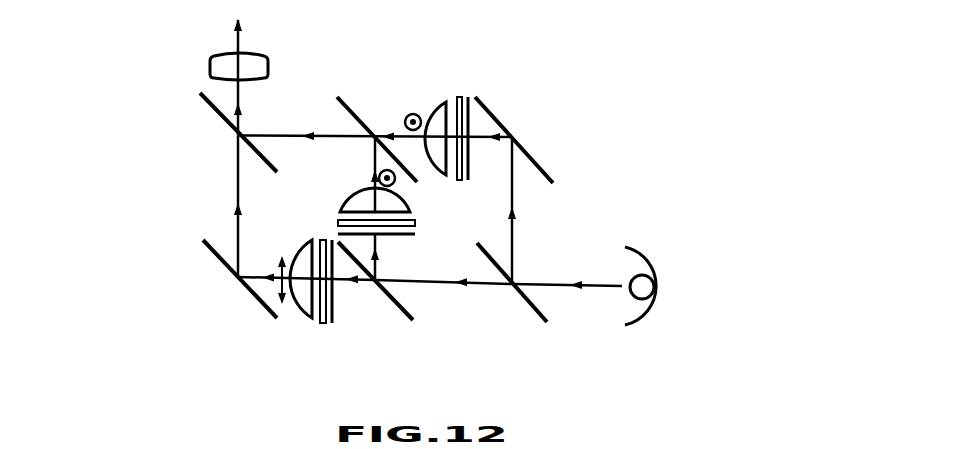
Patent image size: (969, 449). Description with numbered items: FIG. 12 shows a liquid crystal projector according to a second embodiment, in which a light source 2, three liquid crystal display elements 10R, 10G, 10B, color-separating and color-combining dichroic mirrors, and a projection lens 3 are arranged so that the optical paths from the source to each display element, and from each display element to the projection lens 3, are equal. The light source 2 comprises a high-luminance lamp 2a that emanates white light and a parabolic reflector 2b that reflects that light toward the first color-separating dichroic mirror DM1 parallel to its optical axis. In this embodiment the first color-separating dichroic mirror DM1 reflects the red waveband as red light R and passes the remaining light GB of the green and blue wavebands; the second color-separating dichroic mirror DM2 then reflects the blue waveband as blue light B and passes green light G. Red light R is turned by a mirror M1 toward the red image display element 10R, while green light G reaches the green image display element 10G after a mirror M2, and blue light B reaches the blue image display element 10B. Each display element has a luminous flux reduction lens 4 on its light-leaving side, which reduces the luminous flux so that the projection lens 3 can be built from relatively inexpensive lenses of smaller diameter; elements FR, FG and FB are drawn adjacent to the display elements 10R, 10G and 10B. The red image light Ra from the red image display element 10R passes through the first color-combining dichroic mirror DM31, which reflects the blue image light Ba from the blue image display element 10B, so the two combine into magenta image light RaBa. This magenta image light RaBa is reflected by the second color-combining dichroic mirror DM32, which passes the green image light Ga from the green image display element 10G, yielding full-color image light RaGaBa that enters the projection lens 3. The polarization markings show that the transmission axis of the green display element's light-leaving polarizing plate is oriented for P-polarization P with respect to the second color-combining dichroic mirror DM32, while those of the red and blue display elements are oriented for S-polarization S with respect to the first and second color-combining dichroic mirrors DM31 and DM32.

The light source 2 is at (598, 264).
The high-luminance lamp 2a is at (629, 280).
The reflector 2b is at (651, 320).
The projection lens 3 is at (225, 62).
The luminous flux reduction lens 4 is at (440, 100).
The red image display element 10R is at (461, 97).
The green image display element 10G is at (323, 323).
The blue image display element 10B is at (340, 222).
The red filter FR is at (478, 128).
The green filter FG is at (333, 312).
The blue filter FB is at (414, 236).
The first color-separating dichroic mirror DM1 is at (548, 324).
The second color-separating dichroic mirror DM2 is at (413, 322).
The first color-combining dichroic mirror DM31 is at (349, 106).
The second color-combining dichroic mirror DM32 is at (215, 108).
The mirror M1 is at (545, 170).
The mirror M2 is at (215, 258).
The P-polarization P is at (275, 295).
The S-polarization S is at (413, 113).
The red light R is at (515, 228).
The green light G is at (364, 283).
The blue light B is at (378, 266).
The light of the green and blue wavebands GB is at (478, 287).
The red image light Ra is at (376, 134).
The green image light Ga is at (244, 270).
The blue image light Ba is at (374, 153).
The magenta image light RaBa is at (278, 135).
The full-color image light RaGaBa is at (232, 92).